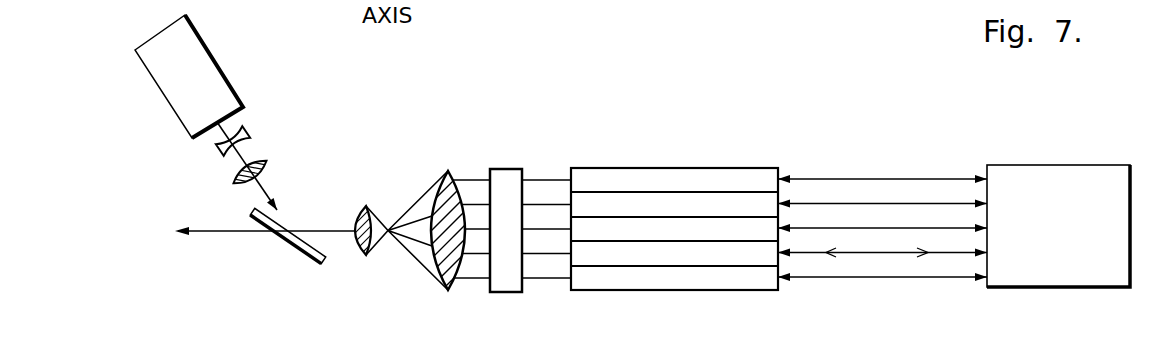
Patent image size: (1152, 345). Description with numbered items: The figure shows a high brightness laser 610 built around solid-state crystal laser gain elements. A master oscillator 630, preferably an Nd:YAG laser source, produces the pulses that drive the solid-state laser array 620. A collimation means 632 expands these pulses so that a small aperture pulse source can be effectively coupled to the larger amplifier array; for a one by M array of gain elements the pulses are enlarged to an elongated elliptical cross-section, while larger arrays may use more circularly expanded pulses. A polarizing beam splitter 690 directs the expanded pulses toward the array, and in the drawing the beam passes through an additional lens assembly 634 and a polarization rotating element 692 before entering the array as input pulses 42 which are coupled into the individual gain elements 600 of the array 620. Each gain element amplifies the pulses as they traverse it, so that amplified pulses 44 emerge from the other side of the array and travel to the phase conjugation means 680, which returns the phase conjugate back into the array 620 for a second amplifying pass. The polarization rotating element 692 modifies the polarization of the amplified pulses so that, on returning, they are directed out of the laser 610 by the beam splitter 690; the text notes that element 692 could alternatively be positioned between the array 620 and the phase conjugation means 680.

The laser 610 is at (663, 88).
The master oscillator 630 is at (205, 45).
The collimation means 632 is at (256, 120).
The polarizing beam splitter 690 is at (312, 264).
The telescope lens assembly 634 is at (450, 163).
The input pulses 42 is at (530, 279).
The polarization rotating element 692 is at (503, 293).
The solid-state laser array 620 is at (623, 167).
The amplifier gain segments 600 is at (732, 180).
The amplified pulses 44 is at (823, 276).
The phase conjugation means 680 is at (1030, 165).